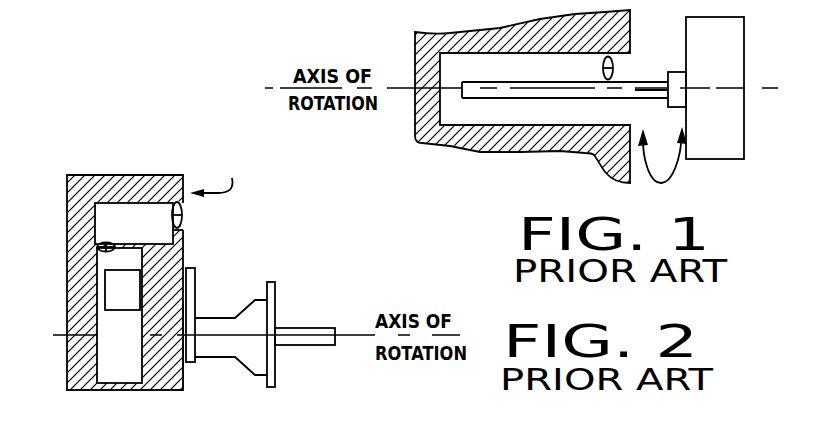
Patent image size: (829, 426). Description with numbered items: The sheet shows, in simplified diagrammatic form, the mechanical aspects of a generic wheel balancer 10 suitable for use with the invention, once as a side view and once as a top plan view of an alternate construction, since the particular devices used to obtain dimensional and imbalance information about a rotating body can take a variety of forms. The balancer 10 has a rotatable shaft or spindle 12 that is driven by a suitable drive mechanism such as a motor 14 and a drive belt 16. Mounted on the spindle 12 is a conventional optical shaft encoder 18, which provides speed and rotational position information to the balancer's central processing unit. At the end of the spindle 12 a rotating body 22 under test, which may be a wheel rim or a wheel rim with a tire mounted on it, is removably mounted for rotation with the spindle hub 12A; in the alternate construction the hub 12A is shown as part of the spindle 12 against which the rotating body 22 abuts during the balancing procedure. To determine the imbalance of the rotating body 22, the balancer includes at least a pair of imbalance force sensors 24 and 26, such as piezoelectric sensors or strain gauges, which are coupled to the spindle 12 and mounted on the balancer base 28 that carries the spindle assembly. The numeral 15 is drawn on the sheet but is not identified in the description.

In FIG. 1, the wheel balancer 10 is at (662, 168).
In FIG. 2, the wheel balancer 10 is at (217, 177).
In FIG. 1, the spindle 12 is at (650, 100).
In FIG. 2, the spindle 12 is at (295, 327).
In FIG. 2, the spindle hub 12A is at (277, 364).
In FIG. 2, the motor 14 is at (121, 293).
In FIG. 2, the housing face 15 is at (172, 338).
In FIG. 2, the drive belt 16 is at (197, 293).
In FIG. 1, the optical shaft encoder 18 is at (678, 72).
In FIG. 1, the rotating body 22 is at (744, 120).
In FIG. 1, the imbalance force sensor 24 is at (482, 108).
In FIG. 2, the imbalance force sensor 24 is at (107, 243).
In FIG. 1, the imbalance force sensor 26 is at (613, 68).
In FIG. 2, the imbalance force sensor 26 is at (182, 213).
In FIG. 1, the balancer base 28 is at (540, 153).
In FIG. 2, the balancer base 28 is at (75, 233).